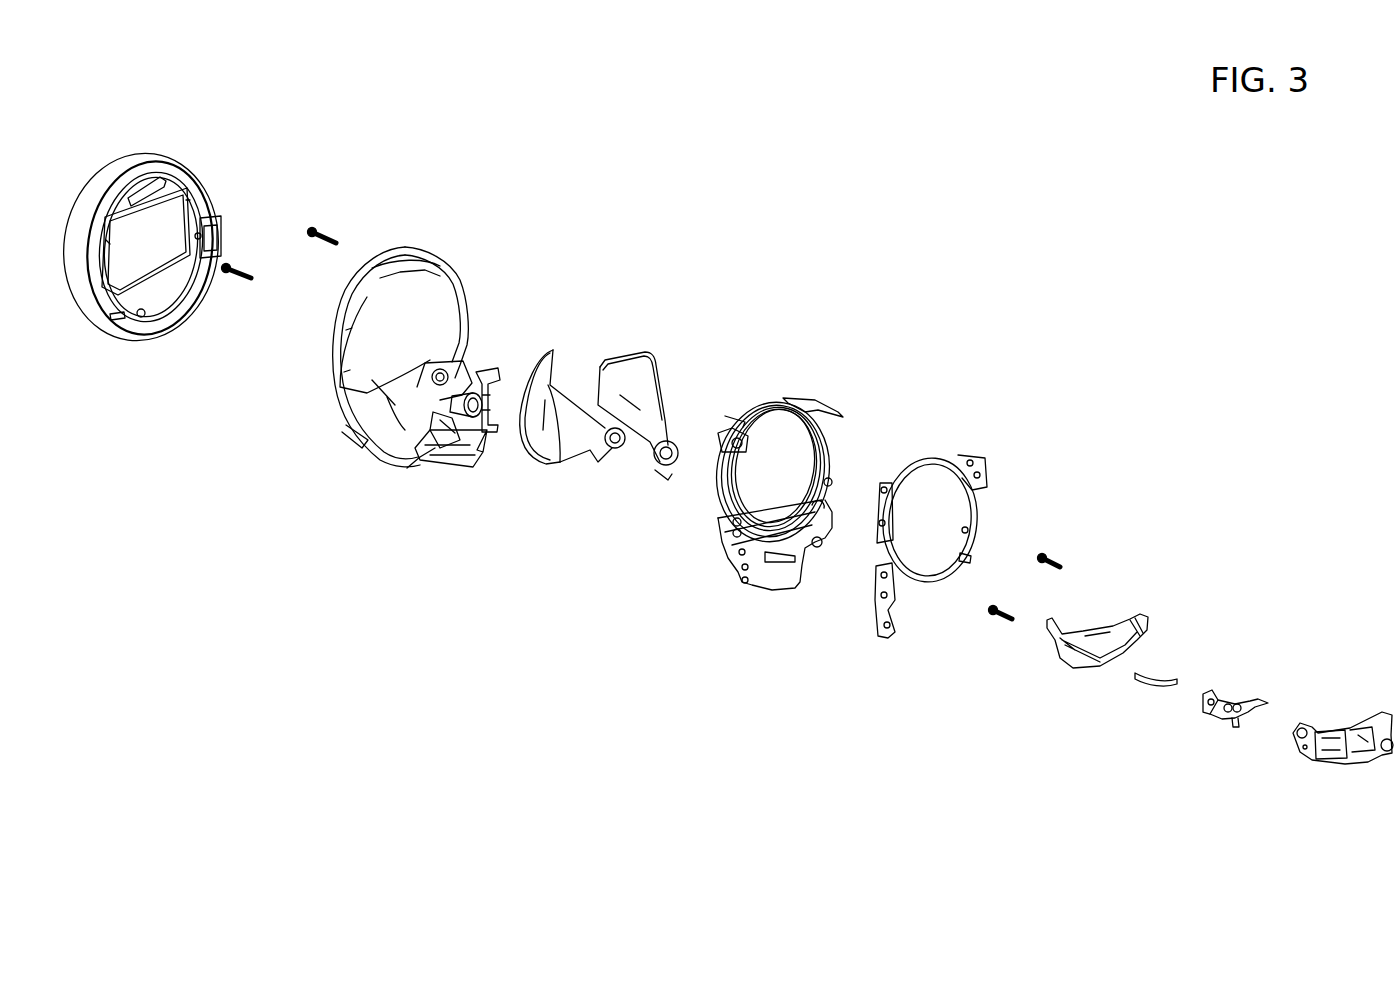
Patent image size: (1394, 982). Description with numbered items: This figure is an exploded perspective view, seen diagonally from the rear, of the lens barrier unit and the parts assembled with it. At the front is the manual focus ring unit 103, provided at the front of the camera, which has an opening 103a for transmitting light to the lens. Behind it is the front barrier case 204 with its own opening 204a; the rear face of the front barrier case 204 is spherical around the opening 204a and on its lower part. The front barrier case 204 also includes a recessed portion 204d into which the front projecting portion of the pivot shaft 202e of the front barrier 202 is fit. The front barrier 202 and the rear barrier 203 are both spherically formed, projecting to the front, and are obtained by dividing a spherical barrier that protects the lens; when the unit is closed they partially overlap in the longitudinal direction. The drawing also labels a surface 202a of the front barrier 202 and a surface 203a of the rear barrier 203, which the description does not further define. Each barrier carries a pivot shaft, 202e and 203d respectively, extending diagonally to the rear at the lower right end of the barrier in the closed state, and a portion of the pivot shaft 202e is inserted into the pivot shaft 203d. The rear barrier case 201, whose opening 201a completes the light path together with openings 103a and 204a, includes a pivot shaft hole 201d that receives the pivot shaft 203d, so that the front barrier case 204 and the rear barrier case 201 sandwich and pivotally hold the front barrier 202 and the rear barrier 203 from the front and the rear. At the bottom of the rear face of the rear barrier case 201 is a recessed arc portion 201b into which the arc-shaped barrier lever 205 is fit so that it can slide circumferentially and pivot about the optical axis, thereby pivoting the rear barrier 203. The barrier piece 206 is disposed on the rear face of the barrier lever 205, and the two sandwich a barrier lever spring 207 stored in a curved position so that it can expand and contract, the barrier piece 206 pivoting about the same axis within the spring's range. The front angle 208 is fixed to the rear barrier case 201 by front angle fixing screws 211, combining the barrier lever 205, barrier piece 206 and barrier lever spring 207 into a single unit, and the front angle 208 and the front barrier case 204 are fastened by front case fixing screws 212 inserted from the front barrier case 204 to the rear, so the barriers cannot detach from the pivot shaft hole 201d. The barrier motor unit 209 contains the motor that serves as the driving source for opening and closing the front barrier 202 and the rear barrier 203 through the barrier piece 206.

The manual focus ring unit 103 is at (137, 160).
The opening 103a is at (166, 222).
The front case fixing screws 212 is at (236, 268).
The front barrier case 204 is at (408, 250).
The opening 204a is at (422, 312).
The recessed portion 204d is at (456, 378).
The front barrier 202 is at (552, 345).
The blade edge 202a is at (541, 440).
The pivot shaft 202e is at (623, 449).
The rear barrier 203 is at (633, 350).
The blade surface 203a is at (642, 382).
The pivot shaft 203d is at (673, 448).
The rear barrier case 201 is at (824, 400).
The opening 201a is at (780, 466).
The recessed arc portion 201b is at (770, 548).
The pivot shaft hole 201d is at (820, 512).
The front angle 208 is at (928, 458).
The front angle fixing screws 211 is at (994, 604).
The barrier lever 205 is at (1140, 609).
The barrier lever spring 207 is at (1163, 686).
The barrier piece 206 is at (1235, 736).
The barrier motor unit 209 is at (1345, 774).